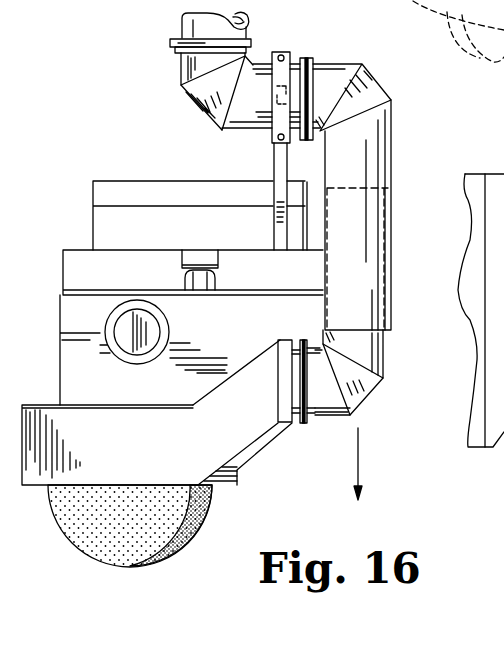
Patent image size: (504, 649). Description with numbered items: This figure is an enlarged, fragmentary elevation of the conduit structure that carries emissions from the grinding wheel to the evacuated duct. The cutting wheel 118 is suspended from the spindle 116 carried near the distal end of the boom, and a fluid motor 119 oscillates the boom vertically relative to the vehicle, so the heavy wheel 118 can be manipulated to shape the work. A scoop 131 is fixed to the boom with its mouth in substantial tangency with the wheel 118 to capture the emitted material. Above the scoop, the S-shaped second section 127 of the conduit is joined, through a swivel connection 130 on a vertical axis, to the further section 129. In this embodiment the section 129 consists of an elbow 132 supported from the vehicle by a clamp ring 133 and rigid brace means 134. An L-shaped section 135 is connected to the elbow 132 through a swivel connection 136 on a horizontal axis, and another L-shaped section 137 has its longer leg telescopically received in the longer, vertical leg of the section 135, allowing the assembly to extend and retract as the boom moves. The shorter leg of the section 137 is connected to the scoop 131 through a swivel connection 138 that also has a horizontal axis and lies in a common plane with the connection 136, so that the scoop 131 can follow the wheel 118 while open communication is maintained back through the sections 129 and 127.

The spindle 116 is at (150, 330).
The cutting wheel 118 is at (208, 517).
The fluid motor 119 is at (220, 281).
The second section 127 is at (181, 25).
The further section 129 is at (396, 137).
The swivel connection 130 is at (250, 48).
The scoop 131 is at (150, 450).
The elbow 132 is at (212, 101).
The clamp ring 133 is at (291, 55).
The rigid brace means 134 is at (272, 155).
The L-shaped section 135 is at (393, 110).
The swivel connection 136 is at (313, 58).
The L-shaped section 137 is at (385, 357).
The swivel connection 138 is at (302, 424).